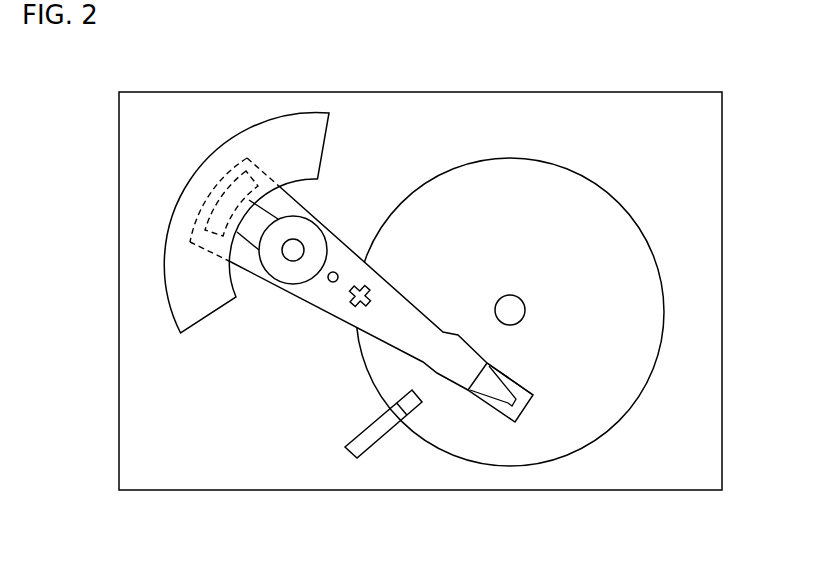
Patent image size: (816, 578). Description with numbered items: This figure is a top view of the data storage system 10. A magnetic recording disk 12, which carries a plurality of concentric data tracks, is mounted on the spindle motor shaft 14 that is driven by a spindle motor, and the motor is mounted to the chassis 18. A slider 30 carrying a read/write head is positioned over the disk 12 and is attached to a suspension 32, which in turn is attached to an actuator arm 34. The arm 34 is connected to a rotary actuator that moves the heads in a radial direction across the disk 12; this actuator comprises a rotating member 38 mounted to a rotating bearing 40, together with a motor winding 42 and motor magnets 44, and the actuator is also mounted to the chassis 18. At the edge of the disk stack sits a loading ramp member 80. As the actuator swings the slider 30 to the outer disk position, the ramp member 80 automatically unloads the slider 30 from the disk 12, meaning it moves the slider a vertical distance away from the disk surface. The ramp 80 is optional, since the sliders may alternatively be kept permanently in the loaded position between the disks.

The data storage system 10 is at (270, 496).
The magnetic recording disk 12 is at (522, 212).
The spindle motor shaft 14 is at (525, 303).
The chassis 18 is at (697, 134).
The slider 30 is at (527, 408).
The suspension 32 is at (397, 318).
The actuator arm 34 is at (335, 272).
The rotating member 38 is at (287, 274).
The rotating bearing 40 is at (298, 243).
The motor winding 42 is at (193, 243).
The motor magnets 44 is at (302, 140).
The loading ramp member 80 is at (367, 438).